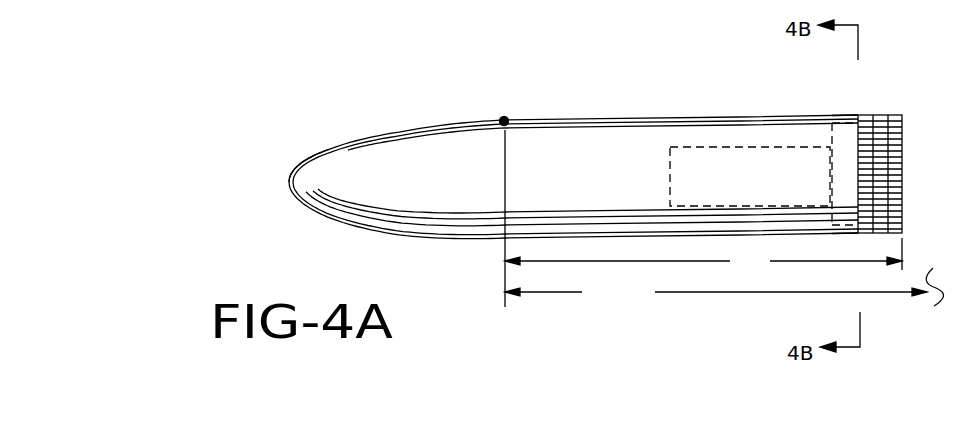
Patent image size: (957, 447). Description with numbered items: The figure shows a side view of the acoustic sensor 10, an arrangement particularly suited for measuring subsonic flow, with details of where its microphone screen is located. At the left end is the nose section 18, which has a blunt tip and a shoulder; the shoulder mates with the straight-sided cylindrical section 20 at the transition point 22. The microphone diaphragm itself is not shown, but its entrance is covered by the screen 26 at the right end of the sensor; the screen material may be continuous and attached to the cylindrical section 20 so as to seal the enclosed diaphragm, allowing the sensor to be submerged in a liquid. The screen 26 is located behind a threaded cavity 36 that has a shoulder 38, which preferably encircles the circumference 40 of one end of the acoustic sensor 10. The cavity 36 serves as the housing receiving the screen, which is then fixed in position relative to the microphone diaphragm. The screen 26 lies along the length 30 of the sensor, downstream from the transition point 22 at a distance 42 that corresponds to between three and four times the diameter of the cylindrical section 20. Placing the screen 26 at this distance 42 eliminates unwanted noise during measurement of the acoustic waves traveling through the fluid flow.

The acoustic sensor 10 is at (420, 97).
The nose section 18 is at (352, 140).
The straight-sided cylindrical section 20 is at (604, 117).
The transition point 22 is at (502, 117).
The screen 26 is at (895, 115).
The length 30 is at (724, 287).
The threaded cavity 36 is at (736, 152).
The shoulder 38 is at (830, 135).
The circumference 40 is at (840, 117).
The distance 42 is at (703, 218).